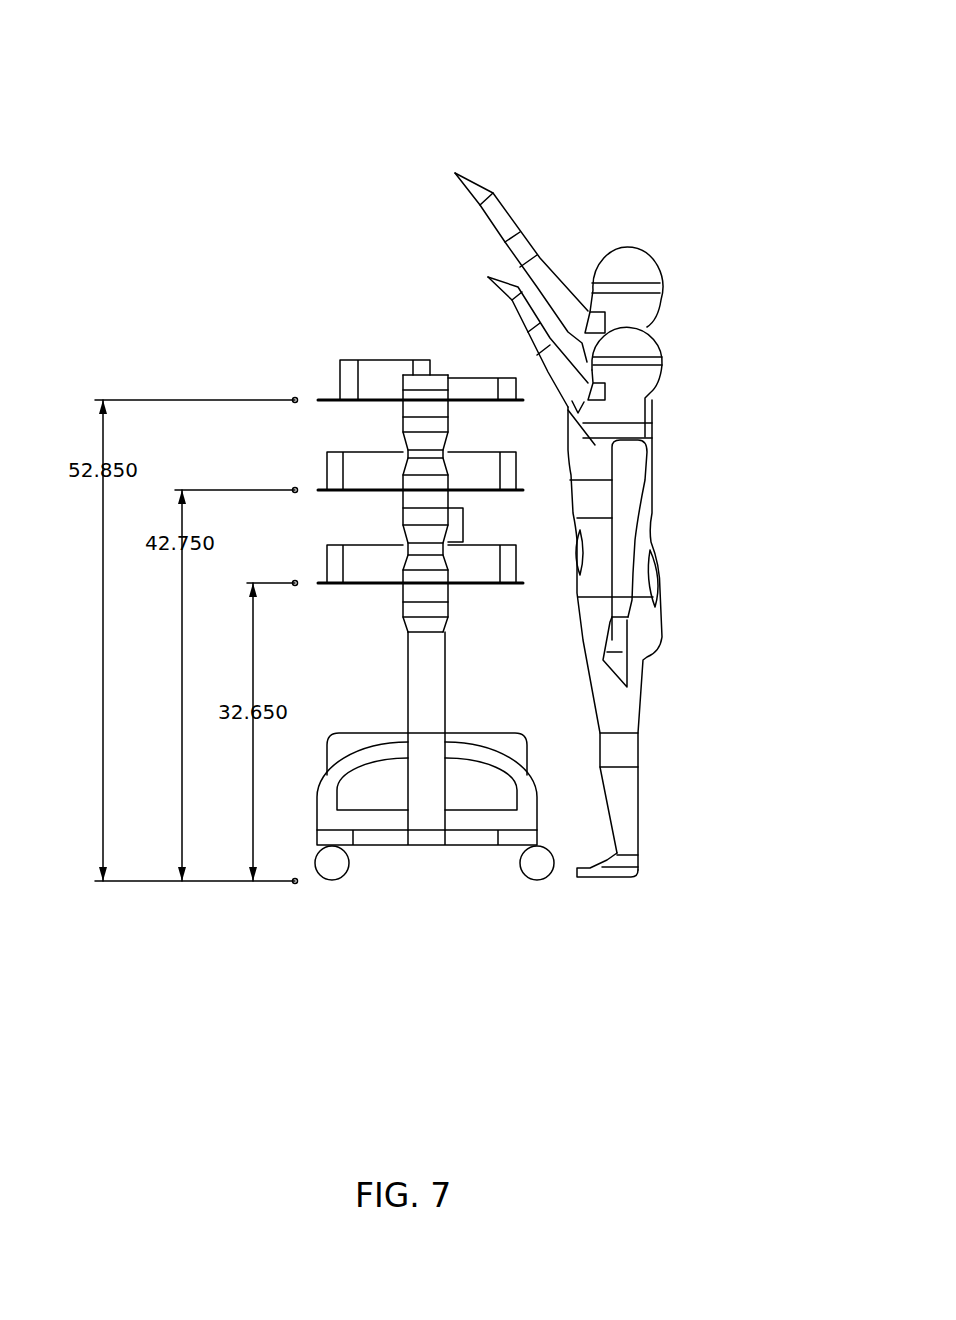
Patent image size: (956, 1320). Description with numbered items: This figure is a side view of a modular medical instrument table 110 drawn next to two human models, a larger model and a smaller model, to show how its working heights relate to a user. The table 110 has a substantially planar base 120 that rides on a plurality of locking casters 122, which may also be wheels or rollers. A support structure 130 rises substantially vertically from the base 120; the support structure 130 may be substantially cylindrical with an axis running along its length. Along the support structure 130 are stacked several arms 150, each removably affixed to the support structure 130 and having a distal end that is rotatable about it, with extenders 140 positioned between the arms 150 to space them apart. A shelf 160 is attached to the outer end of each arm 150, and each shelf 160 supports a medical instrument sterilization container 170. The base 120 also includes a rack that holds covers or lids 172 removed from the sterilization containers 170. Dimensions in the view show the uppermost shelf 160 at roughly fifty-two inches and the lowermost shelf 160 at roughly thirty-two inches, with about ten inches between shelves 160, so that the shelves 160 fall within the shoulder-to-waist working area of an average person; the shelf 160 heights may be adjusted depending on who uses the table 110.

The modular medical instrument table 110 is at (698, 115).
The base 120 is at (490, 845).
The locking casters 122 is at (333, 870).
The support structure 130 is at (420, 767).
The extender 140 is at (465, 527).
The arm 150 is at (440, 408).
The shelf 160 is at (327, 395).
The medical instrument sterilization container 170 is at (367, 380).
The cover or lid 172 is at (517, 747).